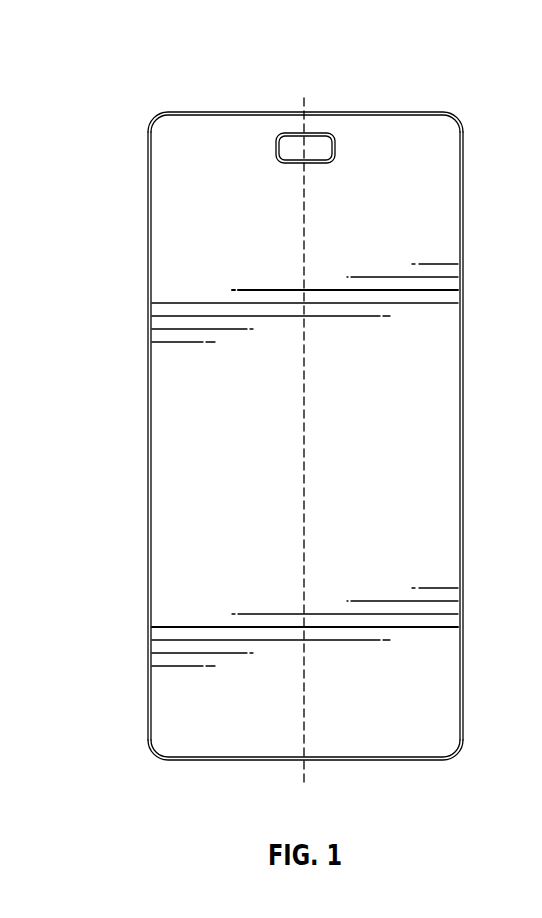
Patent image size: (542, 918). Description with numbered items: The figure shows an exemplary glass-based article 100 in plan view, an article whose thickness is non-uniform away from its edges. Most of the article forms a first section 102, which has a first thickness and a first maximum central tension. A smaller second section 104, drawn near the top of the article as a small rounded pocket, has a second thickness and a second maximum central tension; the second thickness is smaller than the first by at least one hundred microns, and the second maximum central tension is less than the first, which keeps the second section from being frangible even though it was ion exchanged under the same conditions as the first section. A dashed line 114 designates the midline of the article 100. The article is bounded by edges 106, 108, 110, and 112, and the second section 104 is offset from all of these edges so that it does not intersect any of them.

The glass-based article 100 is at (214, 66).
The first section 102 is at (185, 395).
The second section 104 is at (313, 146).
The edge 106 is at (148, 580).
The edge 108 is at (463, 525).
The edge 110 is at (405, 130).
The edge 112 is at (227, 762).
The line 114 is at (303, 248).